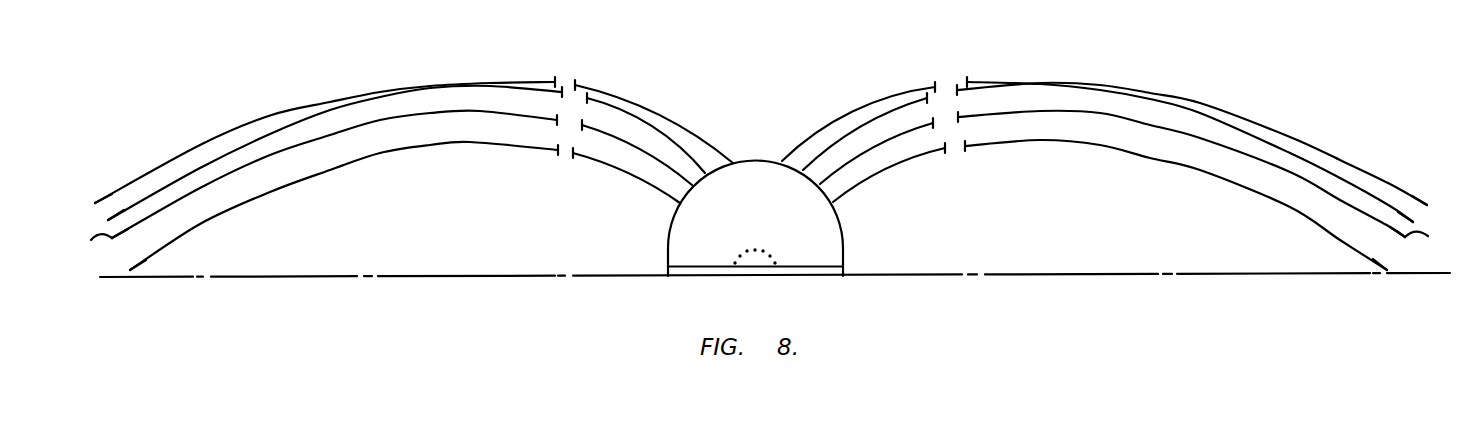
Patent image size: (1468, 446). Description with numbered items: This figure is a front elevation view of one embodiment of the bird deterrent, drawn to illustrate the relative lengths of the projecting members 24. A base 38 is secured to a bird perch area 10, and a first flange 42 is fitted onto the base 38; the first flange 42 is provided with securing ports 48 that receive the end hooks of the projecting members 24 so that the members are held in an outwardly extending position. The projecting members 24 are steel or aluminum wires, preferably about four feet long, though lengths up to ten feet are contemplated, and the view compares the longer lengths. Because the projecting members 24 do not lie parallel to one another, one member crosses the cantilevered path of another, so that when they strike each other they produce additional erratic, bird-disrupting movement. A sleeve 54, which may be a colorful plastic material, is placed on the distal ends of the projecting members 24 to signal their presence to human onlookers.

The bird perch area 10 is at (615, 275).
The projecting members 24 is at (651, 128).
The base 38 is at (845, 272).
The first flange 42 is at (747, 158).
The securing ports 48 is at (762, 250).
The sleeve 54 is at (108, 220).